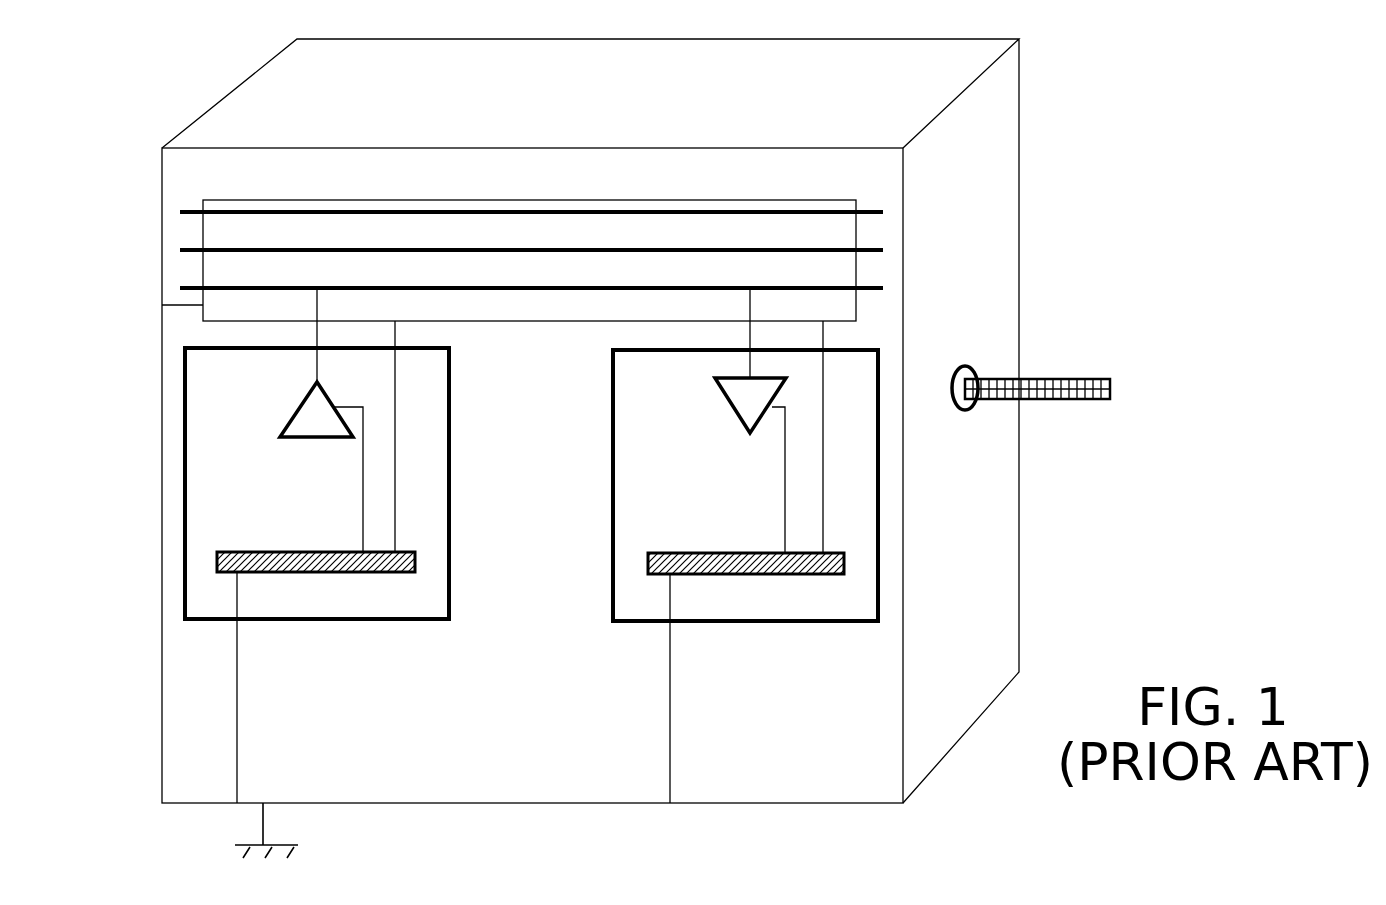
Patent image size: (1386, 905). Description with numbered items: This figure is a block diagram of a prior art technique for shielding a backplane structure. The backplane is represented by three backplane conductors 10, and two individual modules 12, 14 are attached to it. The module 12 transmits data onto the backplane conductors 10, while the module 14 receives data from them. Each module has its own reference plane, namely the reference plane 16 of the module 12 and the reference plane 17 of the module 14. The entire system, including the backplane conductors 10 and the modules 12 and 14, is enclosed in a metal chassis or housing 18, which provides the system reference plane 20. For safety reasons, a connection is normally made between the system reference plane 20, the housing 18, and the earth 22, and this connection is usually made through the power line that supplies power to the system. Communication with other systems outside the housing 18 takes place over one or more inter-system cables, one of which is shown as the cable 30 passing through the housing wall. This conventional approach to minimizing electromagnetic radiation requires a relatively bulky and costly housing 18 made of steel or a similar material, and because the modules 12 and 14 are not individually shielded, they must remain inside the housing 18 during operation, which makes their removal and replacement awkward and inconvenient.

The backplane conductors 10 is at (685, 288).
The module 12 is at (450, 395).
The module 14 is at (613, 557).
The reference plane 16 is at (282, 573).
The reference plane 17 is at (698, 575).
The metal chassis or housing 18 is at (1019, 173).
The system reference plane 20 is at (730, 200).
The earth 22 is at (298, 845).
The inter-system cable 30 is at (1112, 390).